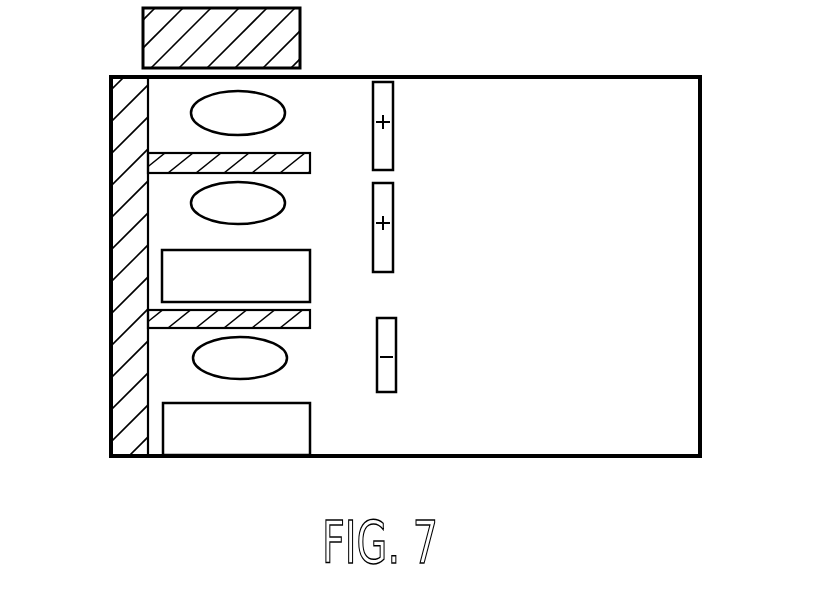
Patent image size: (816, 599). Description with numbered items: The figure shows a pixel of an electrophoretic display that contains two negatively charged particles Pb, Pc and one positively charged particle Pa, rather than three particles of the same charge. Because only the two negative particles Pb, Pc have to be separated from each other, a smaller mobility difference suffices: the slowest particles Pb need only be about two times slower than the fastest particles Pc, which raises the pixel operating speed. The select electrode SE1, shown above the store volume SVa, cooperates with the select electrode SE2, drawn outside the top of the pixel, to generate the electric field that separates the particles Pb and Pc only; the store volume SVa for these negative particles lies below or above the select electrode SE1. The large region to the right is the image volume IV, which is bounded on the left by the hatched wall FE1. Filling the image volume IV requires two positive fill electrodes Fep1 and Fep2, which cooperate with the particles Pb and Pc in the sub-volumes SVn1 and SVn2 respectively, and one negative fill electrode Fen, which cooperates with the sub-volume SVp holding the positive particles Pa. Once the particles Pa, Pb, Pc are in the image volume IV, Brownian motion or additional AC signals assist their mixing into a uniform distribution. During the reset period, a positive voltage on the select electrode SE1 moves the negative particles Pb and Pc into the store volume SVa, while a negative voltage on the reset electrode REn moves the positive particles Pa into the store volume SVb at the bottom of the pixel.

The image volume IV is at (405, 234).
The first field electrode / wall FE1 is at (121, 219).
The select electrode SE2 is at (301, 29).
The select electrode SE1 is at (311, 270).
The sub-volume SVn2 is at (220, 128).
The sub-volume SVn1 is at (220, 223).
The sub-volume SVp is at (220, 378).
The store volume SVa is at (236, 277).
The store volume SVb is at (236, 430).
The reset electrode REn is at (311, 428).
The positive charged particle Pa is at (240, 358).
The negative charged particle Pb is at (238, 203).
The negative charged particle Pc is at (238, 113).
The positive fill electrode Fep2 is at (393, 100).
The positive fill electrode Fep1 is at (393, 198).
The negative fill electrode Fen is at (396, 330).